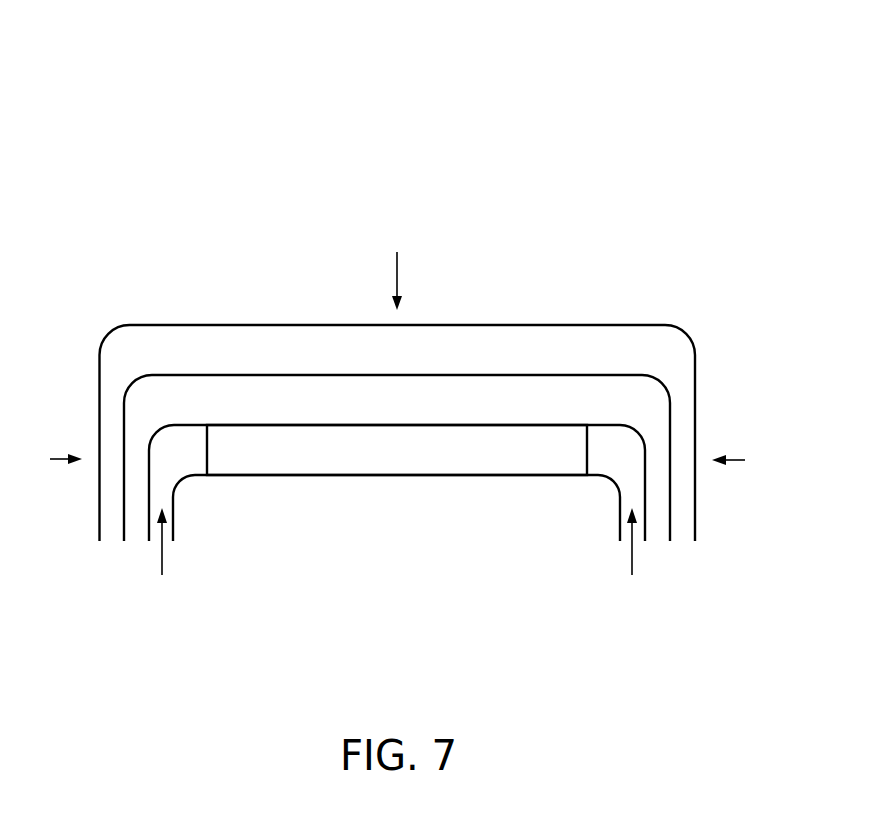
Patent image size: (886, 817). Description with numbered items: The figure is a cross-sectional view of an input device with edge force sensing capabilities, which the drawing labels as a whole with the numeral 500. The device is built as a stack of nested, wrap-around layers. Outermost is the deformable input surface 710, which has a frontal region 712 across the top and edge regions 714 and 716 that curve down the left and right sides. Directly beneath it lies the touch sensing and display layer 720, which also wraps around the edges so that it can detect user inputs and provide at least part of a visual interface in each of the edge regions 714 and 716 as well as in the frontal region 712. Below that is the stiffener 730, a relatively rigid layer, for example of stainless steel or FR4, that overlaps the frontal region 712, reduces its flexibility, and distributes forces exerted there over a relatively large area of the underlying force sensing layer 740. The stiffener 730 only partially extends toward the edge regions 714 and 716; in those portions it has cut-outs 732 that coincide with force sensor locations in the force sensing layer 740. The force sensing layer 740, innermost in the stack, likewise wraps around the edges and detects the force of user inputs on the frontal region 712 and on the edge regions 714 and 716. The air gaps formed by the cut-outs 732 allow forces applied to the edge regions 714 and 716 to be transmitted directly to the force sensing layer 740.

The electronic device / input device stack 500 is at (229, 70).
The deformable input surface 710 is at (547, 362).
The frontal region 712 is at (397, 267).
The edge region 714 is at (45, 458).
The edge region 716 is at (749, 459).
The touch sensing and display layer 720 is at (565, 412).
The stiffener 730 is at (463, 462).
The cut-outs 732 is at (397, 555).
The force sensing layer 740 is at (522, 512).